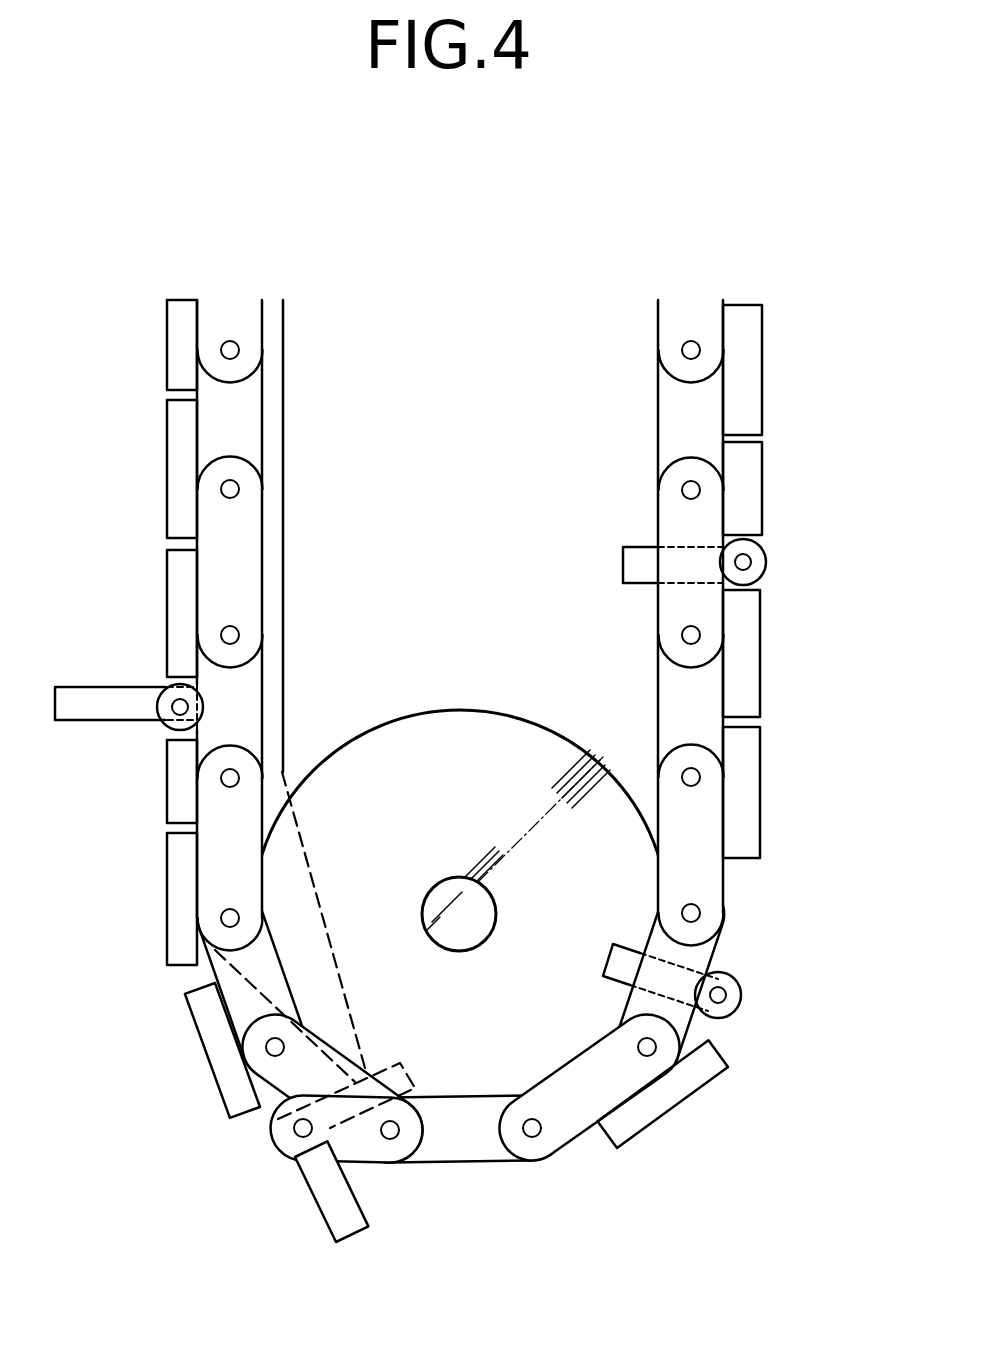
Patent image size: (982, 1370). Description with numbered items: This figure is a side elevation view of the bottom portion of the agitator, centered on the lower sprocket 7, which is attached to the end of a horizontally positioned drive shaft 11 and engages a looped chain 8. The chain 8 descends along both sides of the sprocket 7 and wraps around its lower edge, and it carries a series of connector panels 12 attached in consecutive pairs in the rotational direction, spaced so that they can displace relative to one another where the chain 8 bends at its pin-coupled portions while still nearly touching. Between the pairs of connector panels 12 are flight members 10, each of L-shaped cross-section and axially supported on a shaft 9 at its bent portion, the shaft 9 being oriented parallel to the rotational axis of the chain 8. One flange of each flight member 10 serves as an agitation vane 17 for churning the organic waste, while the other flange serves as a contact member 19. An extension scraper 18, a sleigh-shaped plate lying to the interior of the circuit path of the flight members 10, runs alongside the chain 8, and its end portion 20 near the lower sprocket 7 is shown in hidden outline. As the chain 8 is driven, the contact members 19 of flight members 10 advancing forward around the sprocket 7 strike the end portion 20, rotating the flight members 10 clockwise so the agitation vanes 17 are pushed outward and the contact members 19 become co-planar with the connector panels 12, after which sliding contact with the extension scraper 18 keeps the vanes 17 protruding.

The sprocket 7 is at (425, 737).
The chain 8 is at (192, 700).
The shaft 9 is at (190, 712).
The flight member 10 is at (137, 697).
The drive shaft 11 is at (487, 908).
The connector panel 12 is at (167, 572).
The agitation vane 17 is at (55, 722).
The extension scraper 18 is at (283, 545).
The contact member 19 is at (166, 808).
The end portion 20 is at (358, 1048).